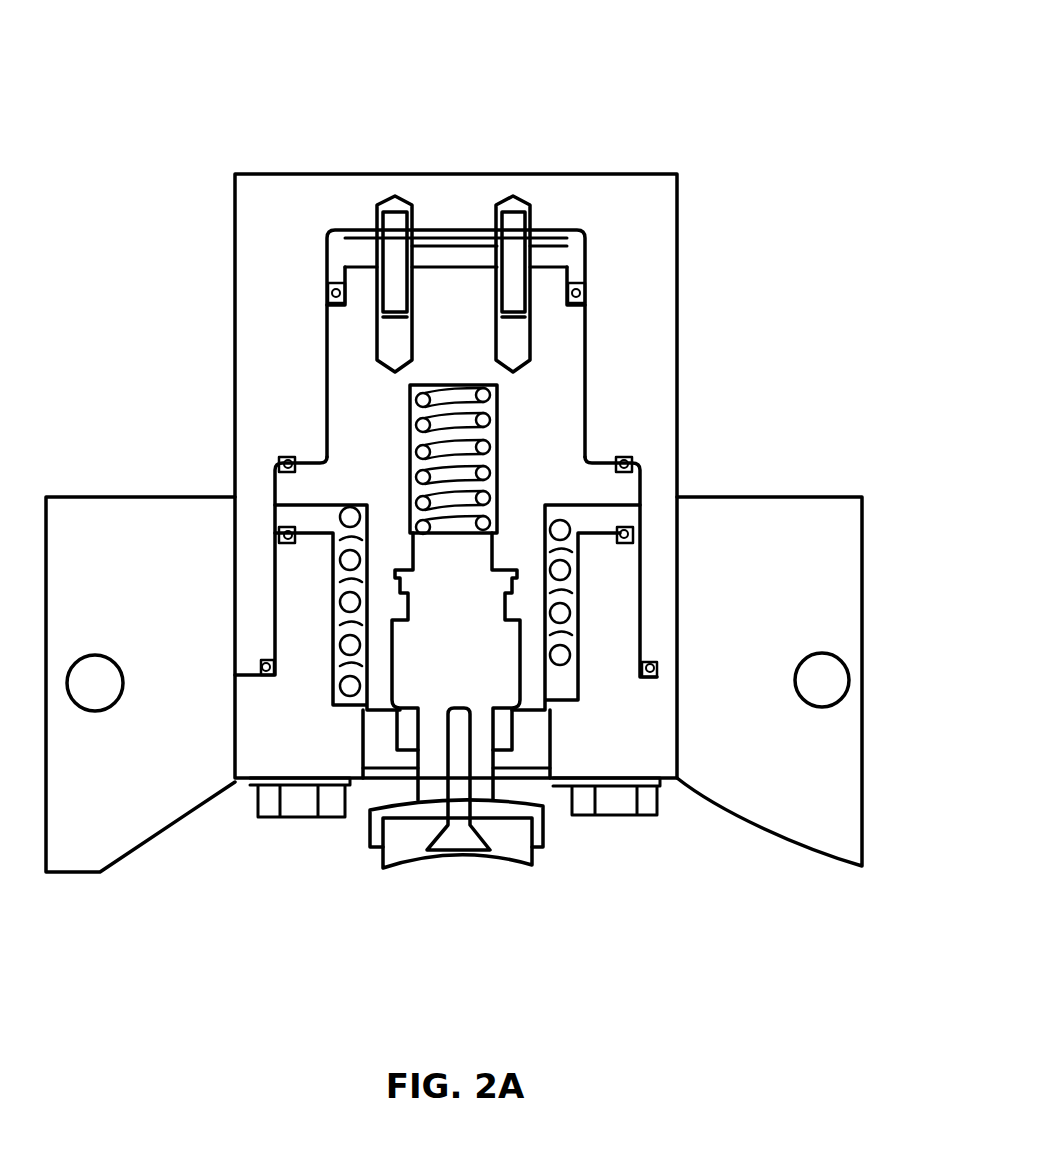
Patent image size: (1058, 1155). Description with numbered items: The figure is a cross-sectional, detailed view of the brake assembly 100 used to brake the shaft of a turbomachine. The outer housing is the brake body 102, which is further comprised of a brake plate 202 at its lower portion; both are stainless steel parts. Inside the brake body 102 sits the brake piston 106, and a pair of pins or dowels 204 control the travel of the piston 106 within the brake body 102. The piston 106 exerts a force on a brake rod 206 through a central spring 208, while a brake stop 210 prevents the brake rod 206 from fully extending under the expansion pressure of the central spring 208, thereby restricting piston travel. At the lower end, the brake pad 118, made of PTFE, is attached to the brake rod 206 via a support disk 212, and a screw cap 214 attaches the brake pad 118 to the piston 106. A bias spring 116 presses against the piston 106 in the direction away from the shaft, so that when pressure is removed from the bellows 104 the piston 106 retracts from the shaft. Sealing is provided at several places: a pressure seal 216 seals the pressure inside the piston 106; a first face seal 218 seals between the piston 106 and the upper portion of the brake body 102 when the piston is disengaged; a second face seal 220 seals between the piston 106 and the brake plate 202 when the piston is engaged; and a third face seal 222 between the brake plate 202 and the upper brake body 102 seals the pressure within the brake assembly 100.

The brake assembly 100 is at (652, 120).
The brake body 102 is at (830, 828).
The bellows 104 is at (582, 232).
The brake piston 106 is at (550, 385).
The bias spring 116 is at (330, 572).
The brake pad 118 is at (512, 847).
The brake plate 202 is at (603, 747).
The pins or dowels 204 is at (382, 222).
The brake rod 206 is at (457, 562).
The central spring 208 is at (412, 398).
The brake stop 210 is at (403, 732).
The support disk 212 is at (395, 813).
The screw cap 214 is at (460, 850).
The pressure seal 216 is at (330, 288).
The first face seal 218 is at (287, 462).
The second face seal 220 is at (285, 533).
The third face seal 222 is at (263, 667).